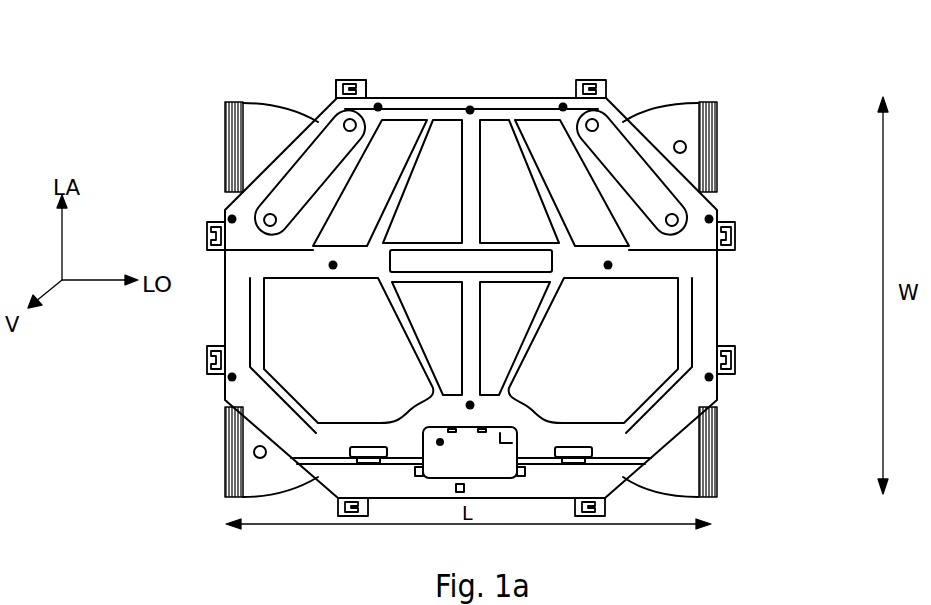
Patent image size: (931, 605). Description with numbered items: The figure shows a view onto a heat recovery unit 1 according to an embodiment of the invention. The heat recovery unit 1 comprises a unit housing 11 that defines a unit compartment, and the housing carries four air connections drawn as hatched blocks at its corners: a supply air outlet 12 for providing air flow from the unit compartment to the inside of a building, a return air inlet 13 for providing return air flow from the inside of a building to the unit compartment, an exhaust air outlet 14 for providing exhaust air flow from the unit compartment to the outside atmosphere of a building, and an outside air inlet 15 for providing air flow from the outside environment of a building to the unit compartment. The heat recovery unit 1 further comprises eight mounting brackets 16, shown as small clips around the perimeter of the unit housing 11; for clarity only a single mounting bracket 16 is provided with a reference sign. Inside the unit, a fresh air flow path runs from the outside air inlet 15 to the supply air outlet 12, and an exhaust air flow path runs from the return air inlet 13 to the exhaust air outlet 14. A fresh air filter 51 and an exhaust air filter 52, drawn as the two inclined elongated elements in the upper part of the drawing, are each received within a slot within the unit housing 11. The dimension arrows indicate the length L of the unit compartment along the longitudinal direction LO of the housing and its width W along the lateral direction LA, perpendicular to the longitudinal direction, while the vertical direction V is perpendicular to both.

The heat recovery unit 1 is at (442, 271).
The unit housing 11 is at (529, 298).
The supply air outlet 12 is at (764, 472).
The return air inlet 13 is at (768, 138).
The exhaust air outlet 14 is at (170, 459).
The outside air inlet 15 is at (179, 125).
The mounting bracket 16 is at (401, 63).
The fresh air filter 51 is at (309, 130).
The exhaust air filter 52 is at (632, 124).